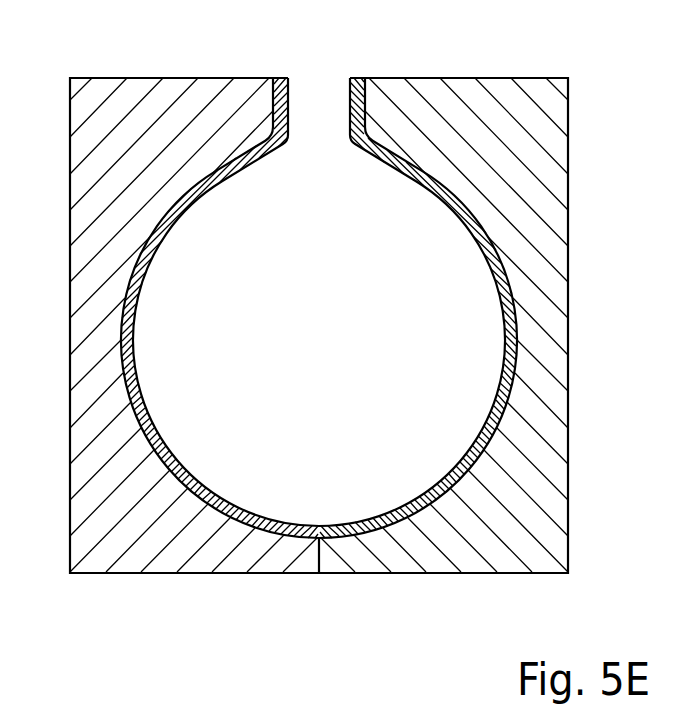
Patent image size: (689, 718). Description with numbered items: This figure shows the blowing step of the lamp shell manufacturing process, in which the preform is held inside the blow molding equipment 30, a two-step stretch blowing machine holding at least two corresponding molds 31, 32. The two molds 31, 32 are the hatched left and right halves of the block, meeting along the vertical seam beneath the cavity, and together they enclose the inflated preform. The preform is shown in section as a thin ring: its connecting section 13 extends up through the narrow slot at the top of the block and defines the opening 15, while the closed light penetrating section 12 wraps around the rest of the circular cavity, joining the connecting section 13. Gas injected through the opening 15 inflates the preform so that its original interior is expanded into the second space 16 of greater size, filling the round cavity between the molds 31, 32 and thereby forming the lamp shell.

The light penetrating section 12 is at (517, 335).
The connecting section 13 is at (362, 110).
The opening 15 is at (310, 90).
The second space 16 is at (153, 352).
The blow molding equipment 30 is at (319, 373).
The mold 31 is at (233, 558).
The mold 32 is at (443, 351).